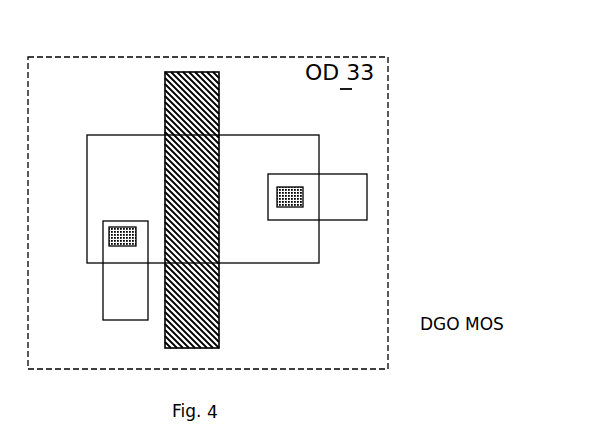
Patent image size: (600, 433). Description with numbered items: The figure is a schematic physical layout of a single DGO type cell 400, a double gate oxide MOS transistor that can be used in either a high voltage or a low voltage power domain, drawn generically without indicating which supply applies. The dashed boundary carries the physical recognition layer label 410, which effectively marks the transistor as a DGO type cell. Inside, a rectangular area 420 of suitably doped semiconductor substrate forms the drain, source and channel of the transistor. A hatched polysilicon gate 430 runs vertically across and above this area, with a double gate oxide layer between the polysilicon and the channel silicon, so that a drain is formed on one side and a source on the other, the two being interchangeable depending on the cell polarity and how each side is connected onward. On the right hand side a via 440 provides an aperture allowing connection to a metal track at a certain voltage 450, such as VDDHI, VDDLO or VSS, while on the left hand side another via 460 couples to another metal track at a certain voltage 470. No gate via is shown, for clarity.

The DGO type cell 400 is at (463, 358).
The OD_33 physical recognition layer label 410 is at (208, 191).
The area of doped semiconductor substrate 420 is at (217, 178).
The polysilicon gate 430 is at (219, 210).
The via 440 is at (314, 176).
The metal track at a certain voltage 450 is at (343, 176).
The via 460 is at (98, 216).
The metal track at a certain voltage 470 is at (100, 270).